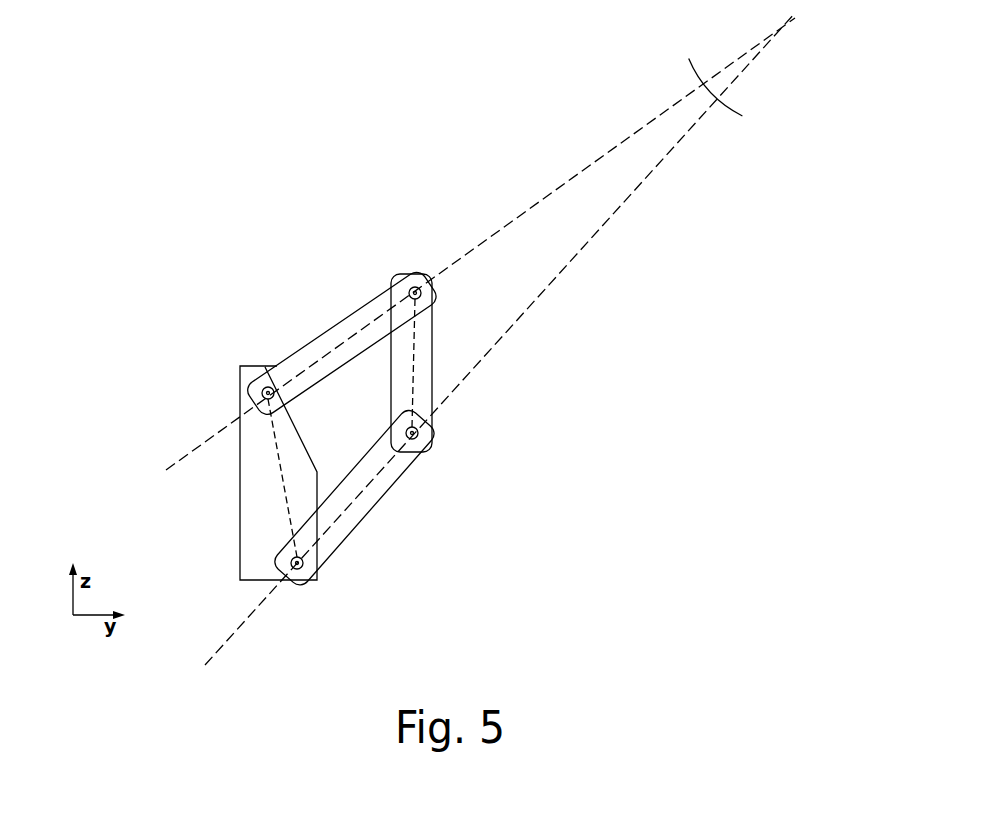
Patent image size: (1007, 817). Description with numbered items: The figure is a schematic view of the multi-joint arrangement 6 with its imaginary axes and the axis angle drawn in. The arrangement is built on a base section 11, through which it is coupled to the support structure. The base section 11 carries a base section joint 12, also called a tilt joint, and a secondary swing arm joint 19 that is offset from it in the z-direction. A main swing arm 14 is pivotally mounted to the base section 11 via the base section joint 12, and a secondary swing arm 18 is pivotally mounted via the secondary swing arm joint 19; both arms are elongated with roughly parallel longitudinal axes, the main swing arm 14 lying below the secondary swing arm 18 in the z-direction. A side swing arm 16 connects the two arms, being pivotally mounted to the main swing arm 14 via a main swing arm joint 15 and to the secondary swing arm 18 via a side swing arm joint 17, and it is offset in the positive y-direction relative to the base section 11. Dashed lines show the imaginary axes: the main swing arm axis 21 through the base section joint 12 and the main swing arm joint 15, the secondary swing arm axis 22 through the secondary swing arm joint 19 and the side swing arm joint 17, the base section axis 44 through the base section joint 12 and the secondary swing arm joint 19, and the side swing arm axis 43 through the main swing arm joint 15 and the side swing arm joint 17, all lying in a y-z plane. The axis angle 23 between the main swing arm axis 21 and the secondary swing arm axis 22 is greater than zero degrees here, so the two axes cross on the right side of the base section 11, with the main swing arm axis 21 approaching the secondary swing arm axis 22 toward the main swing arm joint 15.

The multi-joint arrangement 6 is at (233, 248).
The base section 11 is at (253, 502).
The base section joint 12 is at (303, 578).
The main swing arm 14 is at (377, 498).
The main swing arm joint 15 is at (425, 432).
The side swing arm 16 is at (403, 367).
The side swing arm joint 17 is at (416, 283).
The secondary swing arm 18 is at (329, 340).
The secondary swing arm joint 19 is at (265, 367).
The main swing arm axis 21 is at (500, 339).
The secondary swing arm axis 22 is at (480, 244).
The axis angle 23 is at (728, 80).
The side swing arm axis 43 is at (415, 352).
The base section axis 44 is at (268, 480).